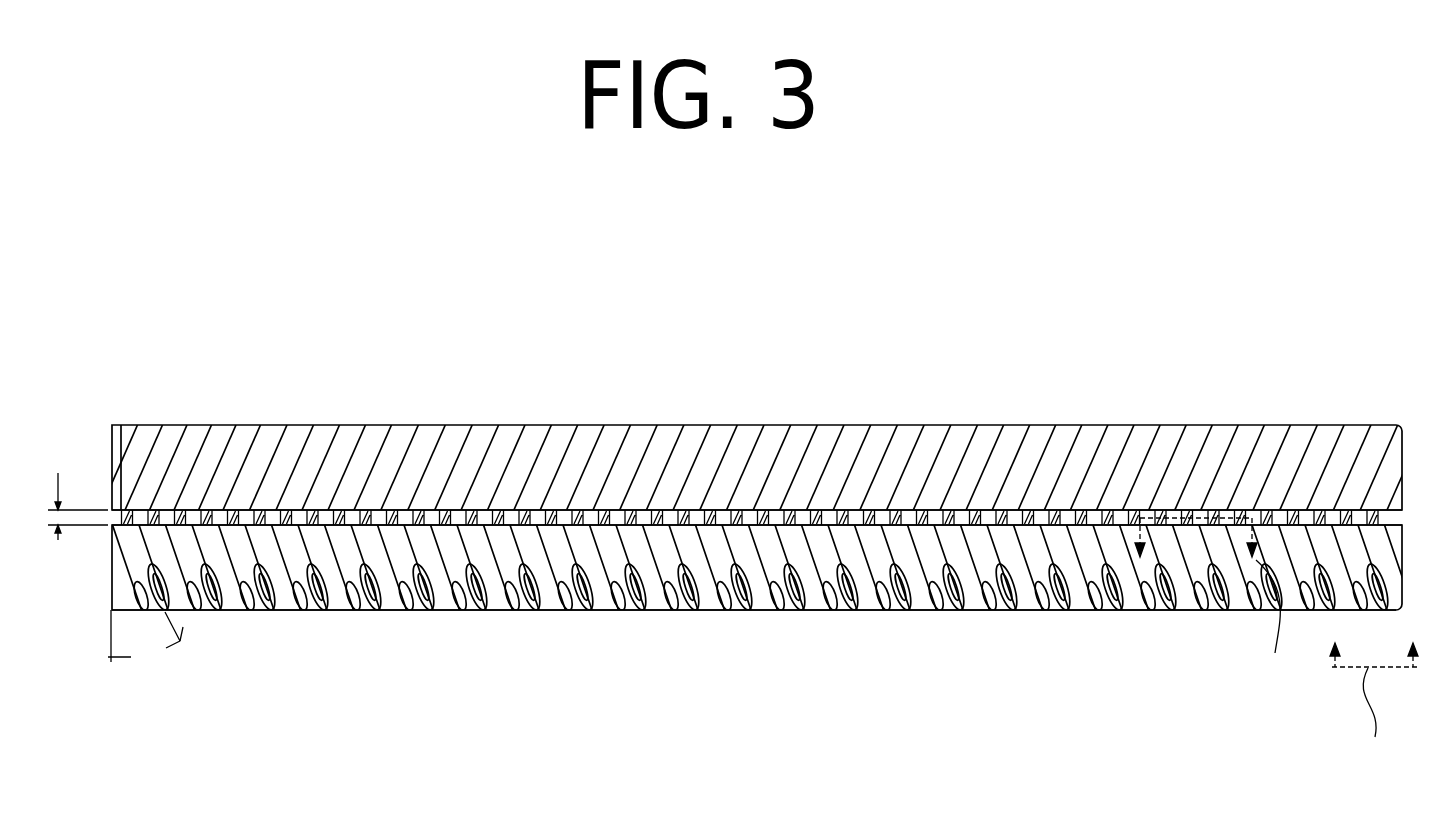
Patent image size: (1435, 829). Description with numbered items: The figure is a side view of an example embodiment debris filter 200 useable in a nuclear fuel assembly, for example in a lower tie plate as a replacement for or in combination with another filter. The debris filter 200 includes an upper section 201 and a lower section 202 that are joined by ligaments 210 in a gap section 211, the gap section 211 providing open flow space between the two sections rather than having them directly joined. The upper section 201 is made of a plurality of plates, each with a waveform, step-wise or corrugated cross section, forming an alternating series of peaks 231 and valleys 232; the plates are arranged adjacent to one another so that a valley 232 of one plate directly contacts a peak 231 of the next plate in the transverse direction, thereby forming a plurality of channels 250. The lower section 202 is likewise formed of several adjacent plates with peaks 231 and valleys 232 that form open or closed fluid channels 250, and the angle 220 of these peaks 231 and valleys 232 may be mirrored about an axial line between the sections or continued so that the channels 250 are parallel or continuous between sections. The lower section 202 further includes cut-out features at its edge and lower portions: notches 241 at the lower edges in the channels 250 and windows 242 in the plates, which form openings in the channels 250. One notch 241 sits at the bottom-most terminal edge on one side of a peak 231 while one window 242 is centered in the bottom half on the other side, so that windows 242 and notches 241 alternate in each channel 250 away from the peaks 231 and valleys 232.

The debris filter 200 is at (1385, 363).
The upper section 201 is at (915, 467).
The lower section 202 is at (1030, 570).
The ligaments 210 is at (702, 510).
The gap section 211 is at (63, 520).
The angle 220 is at (146, 652).
The peaks 231 is at (452, 470).
The valleys 232 is at (763, 541).
The notches 241 is at (307, 612).
The windows 242 is at (763, 626).
The channels 250 is at (597, 610).